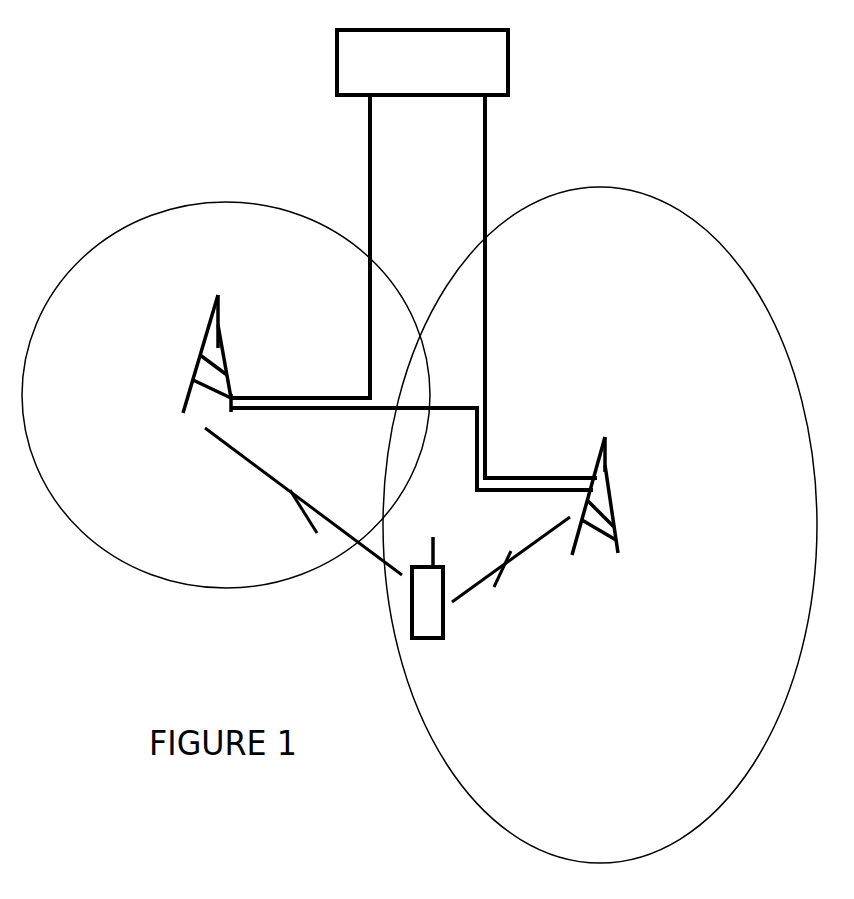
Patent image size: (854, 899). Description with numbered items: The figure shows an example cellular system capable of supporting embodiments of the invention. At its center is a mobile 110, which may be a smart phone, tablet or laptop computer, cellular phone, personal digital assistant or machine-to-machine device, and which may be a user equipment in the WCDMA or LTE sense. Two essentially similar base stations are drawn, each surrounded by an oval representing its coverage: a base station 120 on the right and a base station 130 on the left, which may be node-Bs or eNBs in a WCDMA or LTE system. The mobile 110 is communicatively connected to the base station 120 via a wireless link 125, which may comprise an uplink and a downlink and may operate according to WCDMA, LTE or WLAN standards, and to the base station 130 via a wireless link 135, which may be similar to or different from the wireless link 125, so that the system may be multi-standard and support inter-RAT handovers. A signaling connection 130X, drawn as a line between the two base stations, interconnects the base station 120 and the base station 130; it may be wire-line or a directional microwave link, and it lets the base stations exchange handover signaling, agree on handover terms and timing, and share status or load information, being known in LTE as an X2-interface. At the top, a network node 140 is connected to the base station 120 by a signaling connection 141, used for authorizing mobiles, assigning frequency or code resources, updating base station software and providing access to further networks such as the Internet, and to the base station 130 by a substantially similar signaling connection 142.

The mobile 110 is at (432, 605).
The base station 120 is at (616, 496).
The wireless link 125 is at (511, 568).
The base station 130 is at (194, 354).
The signaling connection 130X is at (411, 449).
The wireless link 135 is at (303, 501).
The network node 140 is at (422, 62).
The signaling connection 141 is at (541, 286).
The signaling connection 142 is at (300, 246).